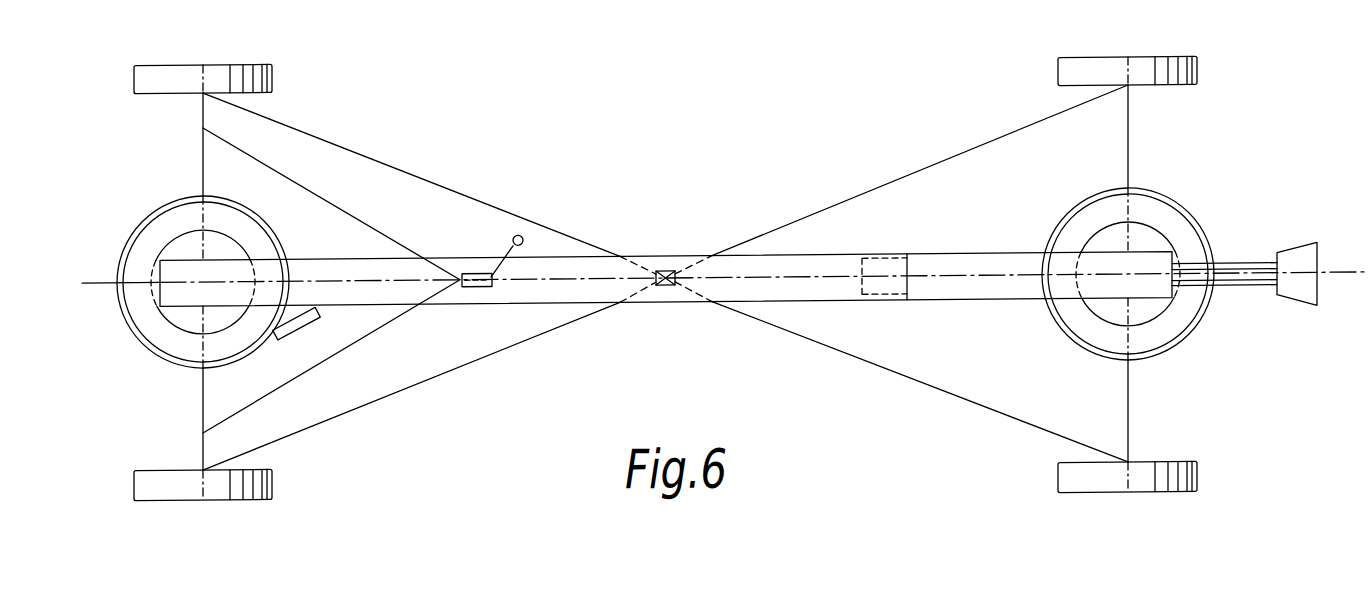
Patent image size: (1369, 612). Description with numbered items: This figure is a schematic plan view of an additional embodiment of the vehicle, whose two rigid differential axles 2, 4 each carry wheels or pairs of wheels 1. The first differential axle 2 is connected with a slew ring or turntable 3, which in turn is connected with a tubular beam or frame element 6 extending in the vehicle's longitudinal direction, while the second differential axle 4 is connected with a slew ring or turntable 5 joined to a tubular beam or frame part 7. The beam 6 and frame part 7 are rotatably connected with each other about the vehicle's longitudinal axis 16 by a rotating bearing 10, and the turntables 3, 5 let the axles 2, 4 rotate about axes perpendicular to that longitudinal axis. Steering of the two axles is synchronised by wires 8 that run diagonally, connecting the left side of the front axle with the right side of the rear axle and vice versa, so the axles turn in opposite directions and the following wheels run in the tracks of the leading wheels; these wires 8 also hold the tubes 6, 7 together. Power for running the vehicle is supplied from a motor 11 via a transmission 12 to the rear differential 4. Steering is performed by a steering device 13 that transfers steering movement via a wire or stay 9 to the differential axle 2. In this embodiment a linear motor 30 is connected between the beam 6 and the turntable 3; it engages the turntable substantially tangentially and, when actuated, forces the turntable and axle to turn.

The wheels 1 is at (272, 76).
The first rigid differential axle 2 is at (177, 243).
The slew ring or turntable 3 is at (280, 239).
The second rigid differential axle 4 is at (1145, 314).
The slew ring or turntable 5 is at (1170, 201).
The beam or frame element 6 is at (665, 268).
The beam or frame part 7 is at (975, 256).
The wire 8 is at (500, 346).
The wire, stay or the like 9 is at (372, 220).
The rotating bearing 10 is at (887, 302).
The motor 11 is at (1304, 252).
The transmission 12 is at (1242, 291).
The steering device 13 is at (507, 249).
The longitudinal axis 16 is at (97, 278).
The linear motor 30 is at (320, 310).